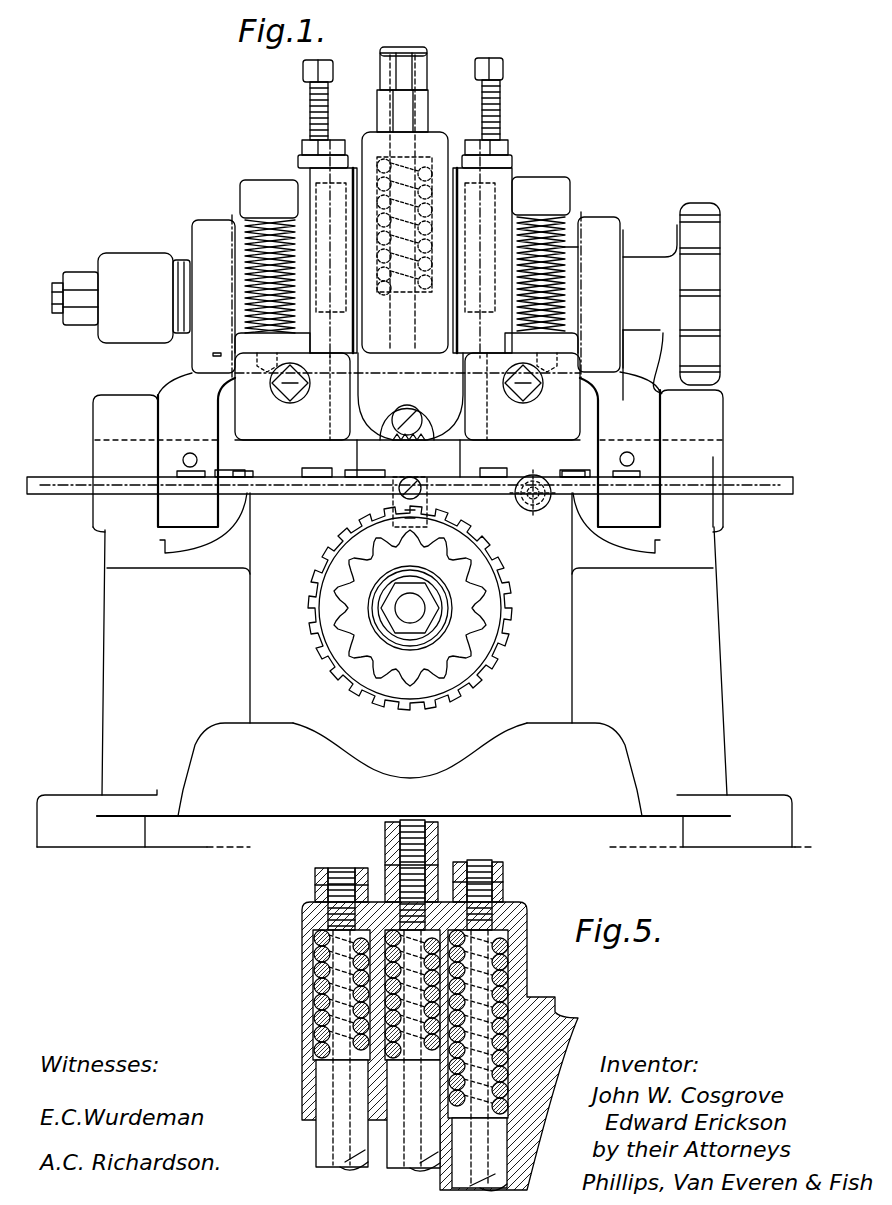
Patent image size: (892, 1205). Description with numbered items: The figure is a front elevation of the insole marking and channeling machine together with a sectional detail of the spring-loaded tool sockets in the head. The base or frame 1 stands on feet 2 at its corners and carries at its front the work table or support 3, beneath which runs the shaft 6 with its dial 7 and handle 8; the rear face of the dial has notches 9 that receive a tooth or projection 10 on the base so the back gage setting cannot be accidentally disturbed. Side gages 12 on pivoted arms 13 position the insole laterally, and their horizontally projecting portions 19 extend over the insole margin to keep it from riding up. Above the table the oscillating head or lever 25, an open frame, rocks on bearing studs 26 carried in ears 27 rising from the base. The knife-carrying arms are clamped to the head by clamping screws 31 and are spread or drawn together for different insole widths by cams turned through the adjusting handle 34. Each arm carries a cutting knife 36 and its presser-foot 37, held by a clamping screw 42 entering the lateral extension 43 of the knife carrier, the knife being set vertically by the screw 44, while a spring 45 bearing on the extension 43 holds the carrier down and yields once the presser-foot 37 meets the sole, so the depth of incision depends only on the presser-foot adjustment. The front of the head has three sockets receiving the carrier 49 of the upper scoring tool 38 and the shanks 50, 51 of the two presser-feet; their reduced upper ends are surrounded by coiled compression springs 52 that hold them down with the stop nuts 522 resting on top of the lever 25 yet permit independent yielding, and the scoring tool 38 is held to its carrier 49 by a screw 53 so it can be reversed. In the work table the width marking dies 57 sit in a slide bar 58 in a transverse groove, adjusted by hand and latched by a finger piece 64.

In FIG. 1, the base or frame 1 is at (717, 681).
In FIG. 1, the feet 2 is at (106, 840).
In FIG. 1, the work table or support 3 is at (387, 483).
In FIG. 1, the shaft 6 is at (217, 353).
In FIG. 1, the dial 7 is at (500, 572).
In FIG. 1, the handle 8 is at (383, 635).
In FIG. 1, the notches 9 is at (320, 552).
In FIG. 1, the tooth or projection 10 is at (430, 500).
In FIG. 1, the side gages 12 is at (347, 475).
In FIG. 1, the pivoted arms 13 is at (292, 490).
In FIG. 1, the horizontally projecting portions 19 is at (372, 433).
In FIG. 1, the oscillating head or lever 25 is at (614, 242).
In FIG. 5, the oscillating head or lever 25 is at (302, 922).
In FIG. 1, the bearing studs 26 is at (93, 445).
In FIG. 1, the ears 27 is at (110, 398).
In FIG. 1, the clamping screw 31 is at (303, 72).
In FIG. 1, the adjusting handle 34 is at (722, 290).
In FIG. 1, the cutting knives 36 is at (316, 172).
In FIG. 1, the presser-foot 37 is at (326, 452).
In FIG. 1, the upper scoring tool 38 is at (430, 462).
In FIG. 1, the clamping screw 42 is at (285, 388).
In FIG. 1, the lateral extension 43 is at (240, 345).
In FIG. 1, the screw 44 is at (320, 158).
In FIG. 1, the spring 45 is at (252, 216).
In FIG. 1, the carrier 49 is at (408, 356).
In FIG. 5, the carrier 49 is at (326, 1086).
In FIG. 5, the shank 50 is at (425, 1170).
In FIG. 5, the shank 51 is at (505, 1160).
In FIG. 1, the coiled compression springs 52 is at (404, 292).
In FIG. 5, the coiled compression springs 52 is at (318, 975).
In FIG. 1, the screw 53 is at (407, 417).
In FIG. 1, the width marking dies 57 is at (178, 473).
In FIG. 1, the slide bar 58 is at (760, 494).
In FIG. 1, the finger piece 64 is at (533, 512).
In FIG. 1, the stop nuts 522 is at (402, 105).
In FIG. 5, the stop nuts 522 is at (335, 868).